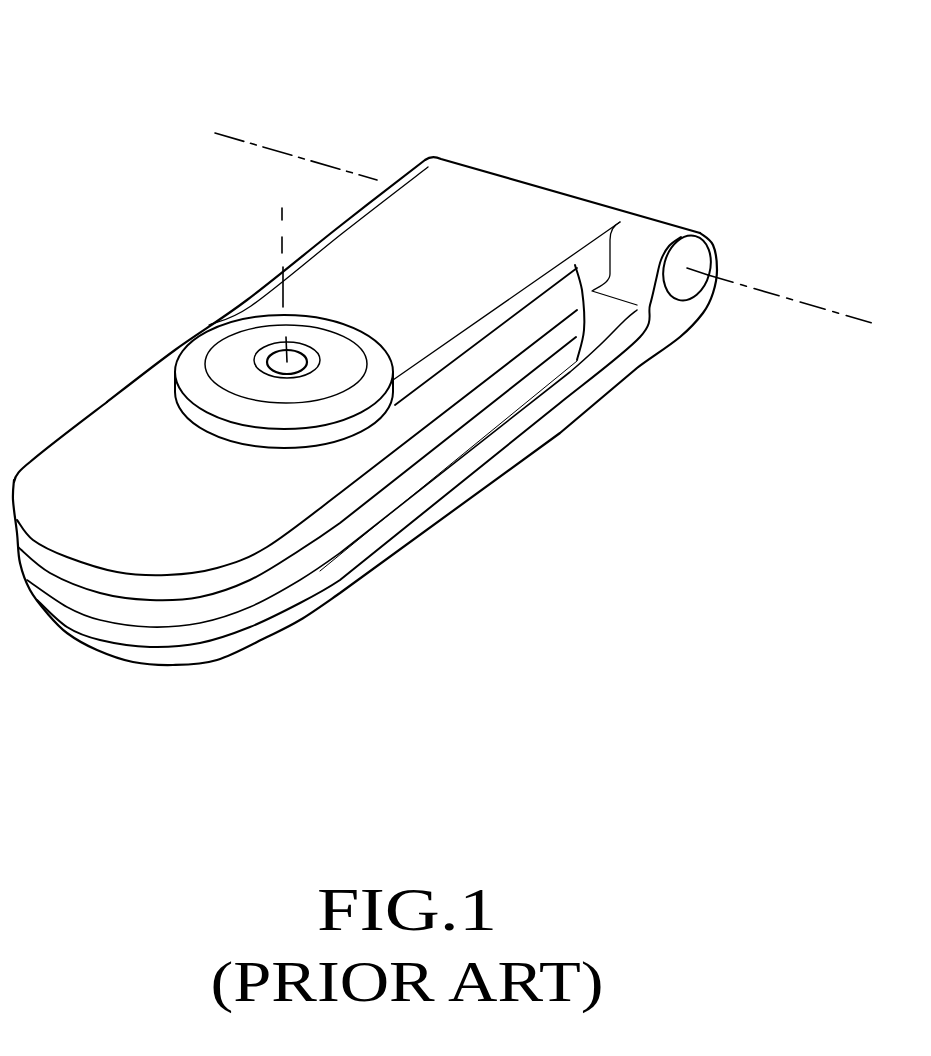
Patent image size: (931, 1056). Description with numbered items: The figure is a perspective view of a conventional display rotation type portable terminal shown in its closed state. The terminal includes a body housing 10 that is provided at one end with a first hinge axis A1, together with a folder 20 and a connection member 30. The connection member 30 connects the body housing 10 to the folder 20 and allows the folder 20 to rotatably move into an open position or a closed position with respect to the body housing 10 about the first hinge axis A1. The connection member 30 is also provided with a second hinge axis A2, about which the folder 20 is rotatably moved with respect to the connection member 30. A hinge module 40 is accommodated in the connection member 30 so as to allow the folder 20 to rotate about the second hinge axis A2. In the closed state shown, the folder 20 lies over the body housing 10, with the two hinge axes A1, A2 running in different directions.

The body housing 10 is at (426, 543).
The folder 20 is at (462, 458).
The connection member 30 is at (408, 286).
The hinge module 40 is at (162, 370).
The first hinge axis A1 is at (790, 296).
The second hinge axis A2 is at (280, 220).